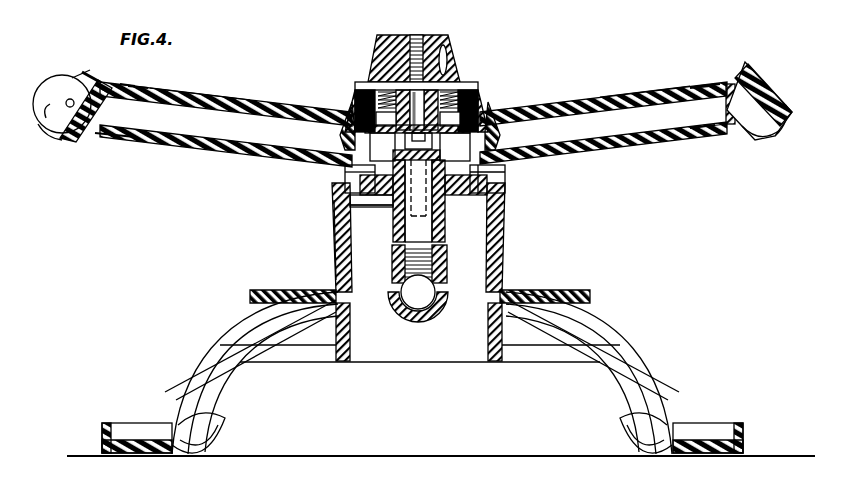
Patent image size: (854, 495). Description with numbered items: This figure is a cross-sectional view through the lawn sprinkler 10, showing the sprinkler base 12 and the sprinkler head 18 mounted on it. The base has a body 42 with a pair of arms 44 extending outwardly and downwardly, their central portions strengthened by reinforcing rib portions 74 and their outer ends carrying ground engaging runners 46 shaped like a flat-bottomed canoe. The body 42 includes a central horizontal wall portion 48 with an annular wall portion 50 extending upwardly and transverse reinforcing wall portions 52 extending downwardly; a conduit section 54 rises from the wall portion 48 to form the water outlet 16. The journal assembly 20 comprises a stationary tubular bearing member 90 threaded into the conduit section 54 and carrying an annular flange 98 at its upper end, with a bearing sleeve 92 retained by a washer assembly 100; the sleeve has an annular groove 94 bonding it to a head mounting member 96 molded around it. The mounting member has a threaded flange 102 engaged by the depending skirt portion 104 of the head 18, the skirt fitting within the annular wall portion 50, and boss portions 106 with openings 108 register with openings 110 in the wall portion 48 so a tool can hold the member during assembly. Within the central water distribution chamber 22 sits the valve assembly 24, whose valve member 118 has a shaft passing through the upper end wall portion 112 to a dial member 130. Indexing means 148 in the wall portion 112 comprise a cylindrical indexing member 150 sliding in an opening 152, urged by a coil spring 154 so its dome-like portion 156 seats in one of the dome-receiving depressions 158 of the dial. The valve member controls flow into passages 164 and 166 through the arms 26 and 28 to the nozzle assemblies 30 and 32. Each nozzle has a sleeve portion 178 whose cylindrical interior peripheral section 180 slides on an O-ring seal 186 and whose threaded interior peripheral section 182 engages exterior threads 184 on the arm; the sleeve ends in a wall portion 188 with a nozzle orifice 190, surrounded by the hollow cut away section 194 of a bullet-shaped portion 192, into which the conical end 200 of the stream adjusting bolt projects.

The lawn sprinkler 10 is at (285, 250).
The sprinkler base 12 is at (545, 285).
The water outlet 16 is at (450, 259).
The sprinkler head 18 is at (545, 100).
The journal assembly 20 is at (372, 223).
The central water distribution chamber 22 is at (478, 163).
The valve assembly 24 is at (418, 45).
The arm 26 is at (238, 150).
The arm 28 is at (600, 148).
The adjustable nozzle assembly 30 is at (65, 150).
The adjustable nozzle assembly 32 is at (757, 150).
The body 42 is at (334, 272).
The arms 44 is at (423, 373).
The ground engaging runners 46 is at (150, 456).
The central horizontal wall portion 48 is at (452, 288).
The annular wall portion 50 is at (504, 224).
The transverse reinforcing wall portions 52 is at (395, 360).
The conduit section 54 is at (404, 265).
The reinforcing rib portions 74 is at (222, 355).
The tubular bearing member 90 is at (418, 222).
The bearing sleeve 92 is at (448, 226).
The annular groove 94 is at (348, 172).
The head mounting member 96 is at (488, 192).
The annular flange 98 is at (440, 145).
The washer assembly 100 is at (385, 150).
The radially outwardly extending flange 102 is at (360, 182).
The depending skirt portion 104 is at (505, 180).
The boss portions 106 is at (360, 188).
The opening 108 is at (350, 205).
The registering openings 110 is at (446, 305).
The upper end wall portion 112 is at (368, 110).
The valve member 118 is at (348, 120).
The dial member 130 is at (417, 36).
The indexing means 148 is at (470, 85).
The cylindrical indexing member 150 is at (470, 100).
The opening 152 is at (478, 108).
The coil spring 154 is at (468, 78).
The dome-like portion 156 is at (447, 62).
The dome-receiving depressions 158 is at (386, 92).
The passage 164 is at (206, 100).
The passage 166 is at (650, 104).
The sleeve portion 178 is at (138, 87).
The cylindrical interior peripheral section 180 is at (697, 135).
The threaded interior peripheral section 182 is at (100, 82).
The exterior threads 184 is at (104, 133).
The O-ring seal 186 is at (134, 88).
The wall portion 188 is at (72, 84).
The nozzle orifice 190 is at (84, 136).
The bullet-shaped portion 192 is at (55, 136).
The hollow cut away section 194 is at (48, 115).
The conical end 200 is at (68, 100).